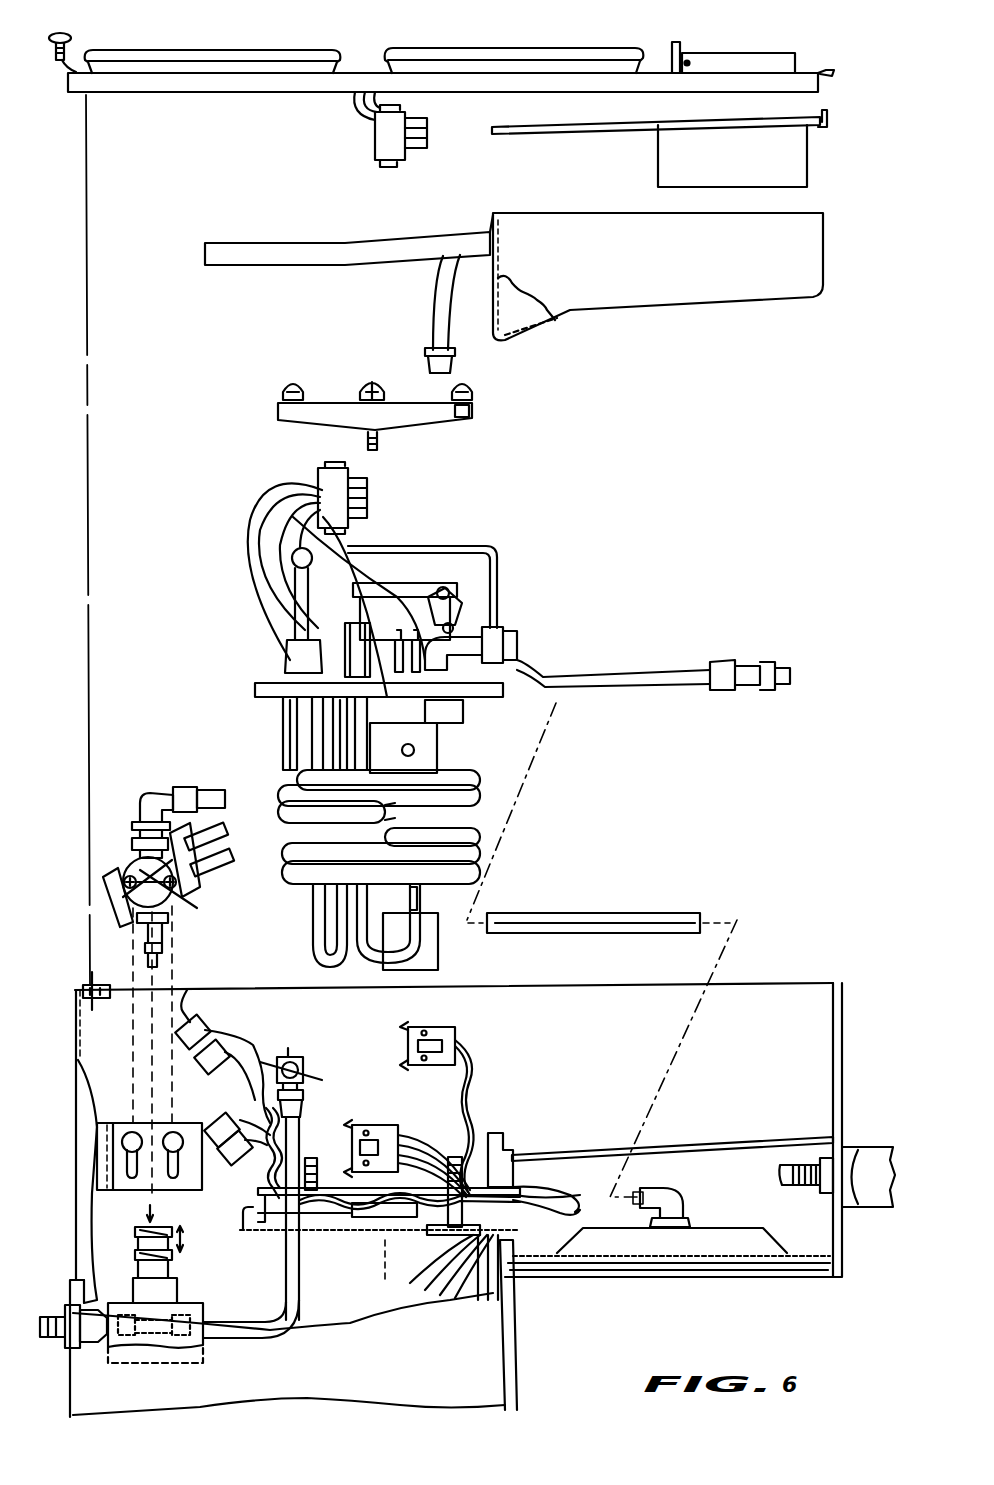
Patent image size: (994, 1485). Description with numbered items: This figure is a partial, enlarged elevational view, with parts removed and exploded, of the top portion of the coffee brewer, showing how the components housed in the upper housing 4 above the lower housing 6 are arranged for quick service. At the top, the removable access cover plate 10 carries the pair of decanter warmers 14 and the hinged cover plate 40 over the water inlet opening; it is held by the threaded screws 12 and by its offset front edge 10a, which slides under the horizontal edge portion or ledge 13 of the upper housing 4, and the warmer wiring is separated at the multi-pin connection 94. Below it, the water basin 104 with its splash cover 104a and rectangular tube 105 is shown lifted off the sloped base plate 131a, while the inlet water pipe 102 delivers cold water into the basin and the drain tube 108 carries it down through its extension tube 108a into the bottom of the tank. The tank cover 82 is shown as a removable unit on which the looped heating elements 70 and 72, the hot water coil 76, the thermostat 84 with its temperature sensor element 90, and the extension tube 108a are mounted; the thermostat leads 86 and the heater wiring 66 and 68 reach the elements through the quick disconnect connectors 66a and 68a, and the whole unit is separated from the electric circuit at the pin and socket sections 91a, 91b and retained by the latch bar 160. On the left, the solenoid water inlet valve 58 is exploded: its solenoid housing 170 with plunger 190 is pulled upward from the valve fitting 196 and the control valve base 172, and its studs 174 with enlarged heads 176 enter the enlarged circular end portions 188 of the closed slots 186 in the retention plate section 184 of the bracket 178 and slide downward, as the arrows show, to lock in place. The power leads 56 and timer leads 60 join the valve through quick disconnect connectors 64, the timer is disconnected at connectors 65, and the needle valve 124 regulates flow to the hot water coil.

The upper housing 4 is at (843, 1073).
The lower housing 6 is at (520, 1352).
The upper access cover plate 10 is at (660, 72).
The front edge 10a is at (832, 70).
The threaded screws 12 is at (72, 40).
The horizontal edge portion 13 is at (835, 983).
The decanter warmers 14 is at (233, 50).
The hinged cover plate 40 is at (733, 54).
The leads 56 is at (287, 1137).
The solenoid water inlet valve 58 is at (118, 893).
The electrical leads 60 is at (253, 1050).
The quick disconnect connectors 64 is at (243, 1120).
The quick disconnect connectors 65 is at (225, 1057).
The wiring 66 is at (385, 585).
The quick disconnect connector 66a is at (293, 640).
The wiring 68 is at (355, 560).
The block 68a is at (440, 745).
The heating element 70 is at (480, 780).
The heating element 72 is at (293, 730).
The hot water coil 76 is at (280, 790).
The tank cover 82 is at (485, 700).
The thermostat 84 is at (478, 548).
The leads 86 is at (262, 550).
The temperature sensor element 90 is at (327, 747).
The pin section 91a is at (320, 480).
The socket section 91b is at (380, 1125).
The multi-pin connection 94 is at (383, 162).
The inlet water pipe 102 is at (296, 243).
The water basin 104 is at (693, 287).
The splash cover 104a is at (555, 125).
The rectangular tube 105 is at (778, 154).
The drain tube 108 is at (465, 640).
The extension tube 108a is at (437, 945).
The needle valve 124 is at (300, 1060).
The sloped base plate 131a is at (607, 1147).
The latch bar 160 is at (410, 415).
The solenoid housing 170 is at (110, 873).
The control valve base 172 is at (137, 1377).
The studs 174 is at (180, 900).
The enlarged heads 176 is at (212, 856).
The bracket 178 is at (122, 1112).
The retention plate section 184 is at (177, 1183).
The closed slots 186 is at (150, 1185).
The enlarged circular end portions 188 is at (140, 1135).
The plunger 190 is at (160, 935).
The valve fitting 196 is at (175, 1255).